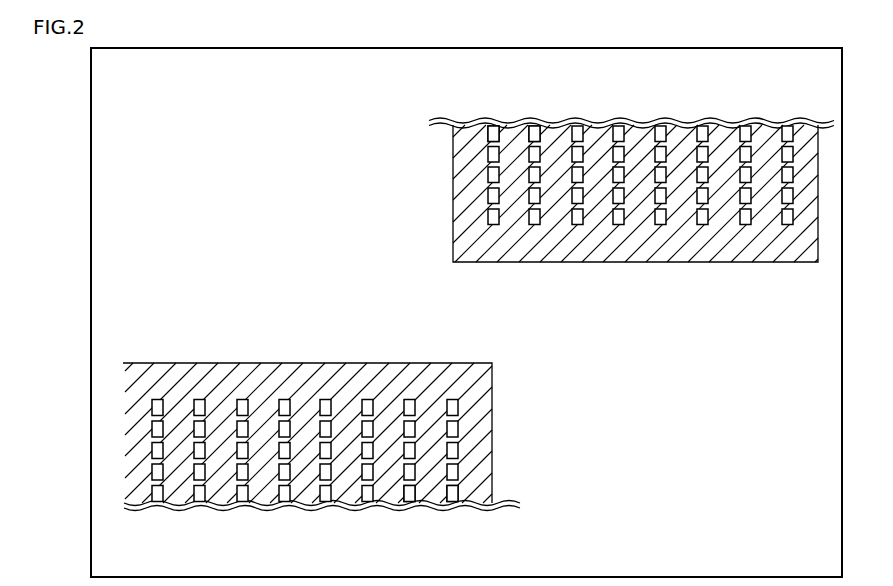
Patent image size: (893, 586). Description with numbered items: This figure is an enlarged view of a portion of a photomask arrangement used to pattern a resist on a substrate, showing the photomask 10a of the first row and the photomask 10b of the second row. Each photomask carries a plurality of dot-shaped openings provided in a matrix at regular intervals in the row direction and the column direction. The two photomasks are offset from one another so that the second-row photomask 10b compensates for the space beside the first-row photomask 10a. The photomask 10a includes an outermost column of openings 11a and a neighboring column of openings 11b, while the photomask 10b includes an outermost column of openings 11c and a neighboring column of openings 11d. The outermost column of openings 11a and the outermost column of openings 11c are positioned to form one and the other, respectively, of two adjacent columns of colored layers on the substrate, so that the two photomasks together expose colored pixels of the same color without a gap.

The photomask 10a is at (150, 362).
The photomask 10b is at (462, 121).
The outermost column of openings 11a is at (452, 494).
The column of openings 11b is at (409, 494).
The outermost column of openings 11c is at (492, 135).
The column of openings 11d is at (535, 135).